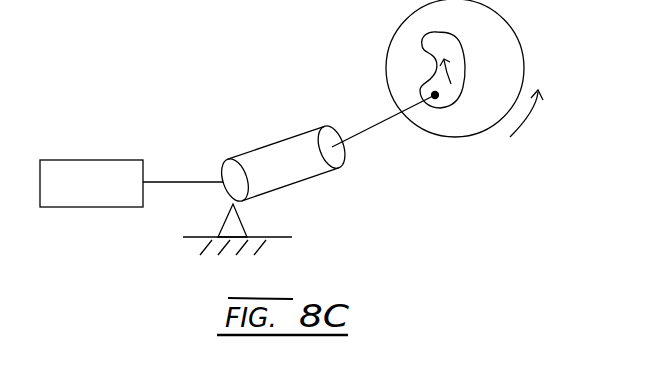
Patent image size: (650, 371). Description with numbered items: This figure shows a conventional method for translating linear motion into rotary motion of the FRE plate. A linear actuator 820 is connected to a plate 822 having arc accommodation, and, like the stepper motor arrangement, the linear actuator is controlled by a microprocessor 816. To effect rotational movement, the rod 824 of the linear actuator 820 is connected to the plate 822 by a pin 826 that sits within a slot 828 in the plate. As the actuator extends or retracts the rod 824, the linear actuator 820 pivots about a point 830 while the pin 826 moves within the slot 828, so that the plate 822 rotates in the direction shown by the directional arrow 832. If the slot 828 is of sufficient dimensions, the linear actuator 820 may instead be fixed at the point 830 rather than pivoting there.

The microprocessor 816 is at (97, 160).
The linear actuator 820 is at (289, 111).
The plate 822 is at (517, 28).
The rod 824 is at (377, 123).
The pin 826 is at (435, 95).
The slot 828 is at (448, 107).
The point 830 is at (233, 204).
The directional arrow 832 is at (530, 123).